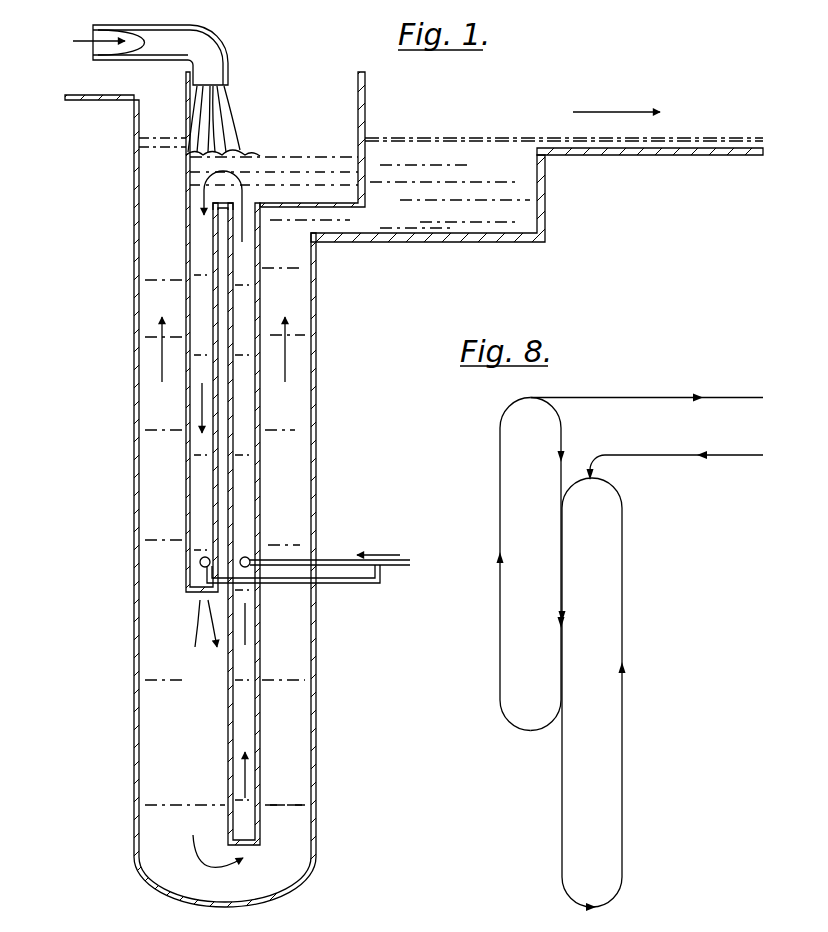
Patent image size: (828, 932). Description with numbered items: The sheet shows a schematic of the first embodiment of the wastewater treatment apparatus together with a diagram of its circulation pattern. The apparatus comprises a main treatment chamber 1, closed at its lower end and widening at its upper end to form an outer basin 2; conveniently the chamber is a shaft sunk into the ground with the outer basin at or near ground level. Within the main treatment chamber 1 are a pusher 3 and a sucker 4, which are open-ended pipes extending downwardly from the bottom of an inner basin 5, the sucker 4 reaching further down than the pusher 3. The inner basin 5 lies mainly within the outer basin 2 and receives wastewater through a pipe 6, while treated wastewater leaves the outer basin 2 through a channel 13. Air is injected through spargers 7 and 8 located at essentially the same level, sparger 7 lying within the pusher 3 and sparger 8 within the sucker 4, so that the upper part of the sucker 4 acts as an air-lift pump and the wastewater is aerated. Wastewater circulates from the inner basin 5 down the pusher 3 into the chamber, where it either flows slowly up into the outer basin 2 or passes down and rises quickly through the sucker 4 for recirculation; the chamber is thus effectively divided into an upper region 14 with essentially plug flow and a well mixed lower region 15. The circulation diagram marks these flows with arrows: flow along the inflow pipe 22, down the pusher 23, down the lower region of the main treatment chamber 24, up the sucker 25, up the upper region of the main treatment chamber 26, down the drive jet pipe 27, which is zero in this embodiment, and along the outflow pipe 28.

In FIG. 1, the main treatment chamber 1 is at (293, 393).
In FIG. 1, the outer basin 2 is at (445, 212).
In FIG. 1, the pusher 3 is at (202, 477).
In FIG. 1, the sucker 4 is at (248, 443).
In FIG. 1, the inner basin 5 is at (313, 95).
In FIG. 1, the pipe 6 is at (215, 56).
In FIG. 1, the sparger 7 is at (200, 560).
In FIG. 1, the sparger 8 is at (250, 558).
In FIG. 1, the channel 13 is at (695, 146).
In FIG. 1, the upper region 14 is at (160, 282).
In FIG. 1, the lower region 15 is at (178, 710).
In FIG. 8, the flow along inflow pipe 22 is at (665, 460).
In FIG. 8, the flow down pusher 23 is at (562, 570).
In FIG. 8, the flow down lower region of main treatment chamber 24 is at (562, 815).
In FIG. 8, the flow up sucker 25 is at (622, 645).
In FIG. 8, the flow up upper region of main treatment chamber 26 is at (500, 508).
In FIG. 8, the flow down drive jet pipe 27 is at (560, 428).
In FIG. 8, the flow along outflow pipe 28 is at (662, 396).